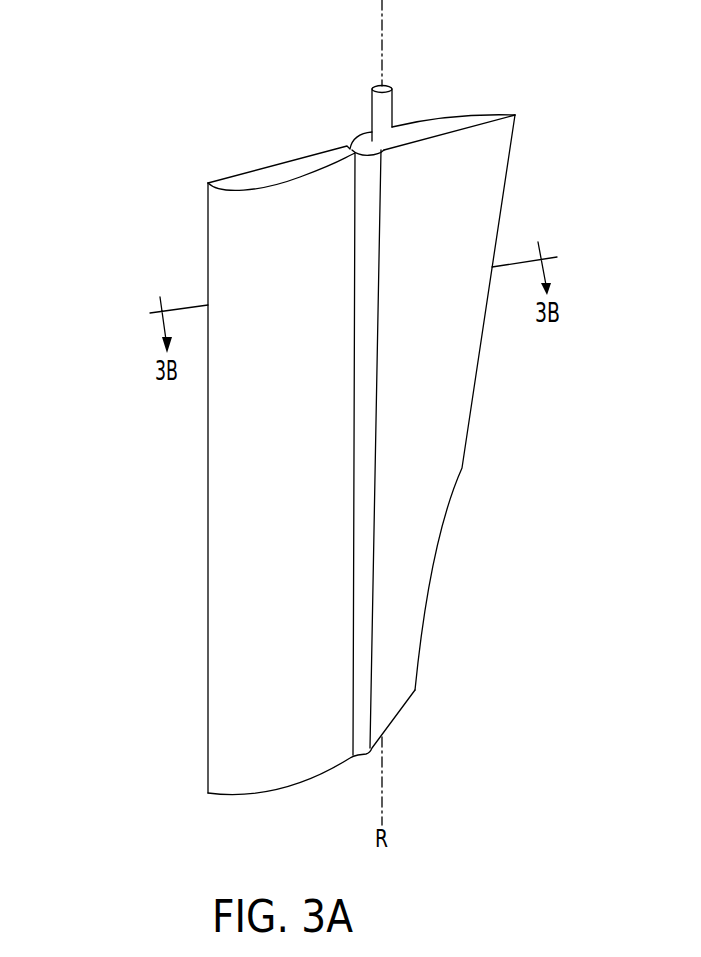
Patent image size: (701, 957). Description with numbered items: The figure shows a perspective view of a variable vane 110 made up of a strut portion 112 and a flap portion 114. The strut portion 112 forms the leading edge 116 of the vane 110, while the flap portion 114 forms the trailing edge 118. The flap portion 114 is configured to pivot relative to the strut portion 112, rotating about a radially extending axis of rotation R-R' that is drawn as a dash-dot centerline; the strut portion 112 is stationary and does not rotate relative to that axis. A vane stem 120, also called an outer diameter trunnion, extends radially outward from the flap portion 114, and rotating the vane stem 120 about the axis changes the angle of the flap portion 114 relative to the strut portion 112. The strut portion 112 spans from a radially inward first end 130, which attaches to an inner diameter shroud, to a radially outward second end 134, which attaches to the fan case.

The vane 110 is at (137, 102).
The strut portion 112 is at (285, 518).
The flap portion 114 is at (433, 392).
The leading edge 116 is at (207, 602).
The trailing edge 118 is at (462, 468).
The vane stem 120 is at (388, 101).
The radially inward end 130 is at (292, 778).
The radially outward end 134 is at (245, 183).